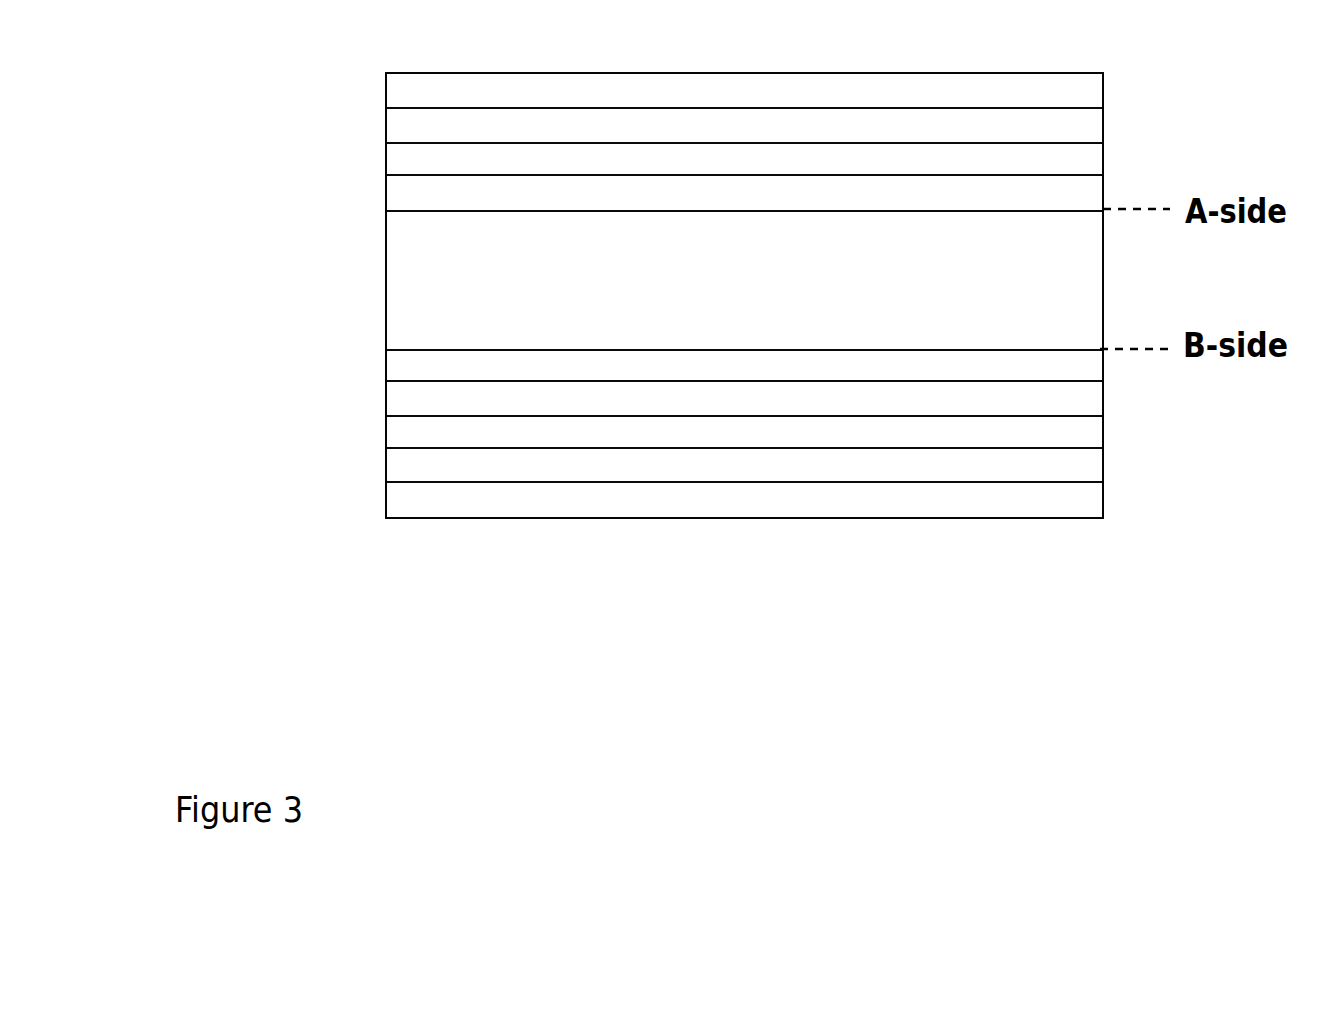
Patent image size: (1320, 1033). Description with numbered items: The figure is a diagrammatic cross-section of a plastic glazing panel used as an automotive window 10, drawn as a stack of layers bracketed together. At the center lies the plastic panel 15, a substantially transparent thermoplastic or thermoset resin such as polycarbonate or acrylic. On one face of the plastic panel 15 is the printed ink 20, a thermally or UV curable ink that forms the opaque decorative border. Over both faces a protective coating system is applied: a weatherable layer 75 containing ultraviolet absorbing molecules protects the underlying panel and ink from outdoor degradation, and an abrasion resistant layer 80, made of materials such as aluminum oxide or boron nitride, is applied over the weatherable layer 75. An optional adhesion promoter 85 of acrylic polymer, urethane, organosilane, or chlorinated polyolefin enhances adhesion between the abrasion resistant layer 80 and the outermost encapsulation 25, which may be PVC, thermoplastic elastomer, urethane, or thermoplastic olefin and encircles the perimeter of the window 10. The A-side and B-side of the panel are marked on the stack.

The window 10 is at (268, 65).
The plastic panel 15 is at (398, 292).
The printed ink 20 is at (398, 362).
The encapsulation 25 is at (400, 123).
The weatherable layer 75 is at (392, 197).
The abrasion resistant layer 80 is at (392, 158).
The adhesion promoter 85 is at (400, 87).